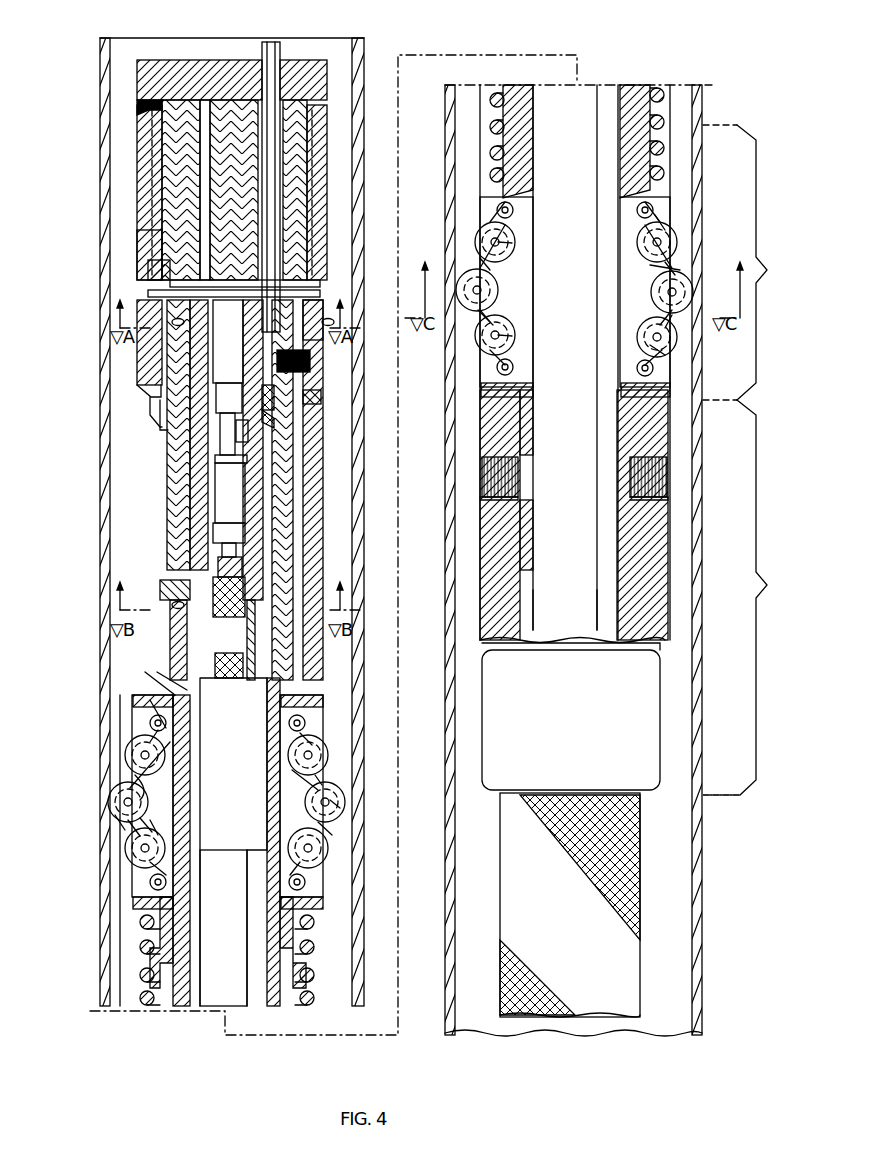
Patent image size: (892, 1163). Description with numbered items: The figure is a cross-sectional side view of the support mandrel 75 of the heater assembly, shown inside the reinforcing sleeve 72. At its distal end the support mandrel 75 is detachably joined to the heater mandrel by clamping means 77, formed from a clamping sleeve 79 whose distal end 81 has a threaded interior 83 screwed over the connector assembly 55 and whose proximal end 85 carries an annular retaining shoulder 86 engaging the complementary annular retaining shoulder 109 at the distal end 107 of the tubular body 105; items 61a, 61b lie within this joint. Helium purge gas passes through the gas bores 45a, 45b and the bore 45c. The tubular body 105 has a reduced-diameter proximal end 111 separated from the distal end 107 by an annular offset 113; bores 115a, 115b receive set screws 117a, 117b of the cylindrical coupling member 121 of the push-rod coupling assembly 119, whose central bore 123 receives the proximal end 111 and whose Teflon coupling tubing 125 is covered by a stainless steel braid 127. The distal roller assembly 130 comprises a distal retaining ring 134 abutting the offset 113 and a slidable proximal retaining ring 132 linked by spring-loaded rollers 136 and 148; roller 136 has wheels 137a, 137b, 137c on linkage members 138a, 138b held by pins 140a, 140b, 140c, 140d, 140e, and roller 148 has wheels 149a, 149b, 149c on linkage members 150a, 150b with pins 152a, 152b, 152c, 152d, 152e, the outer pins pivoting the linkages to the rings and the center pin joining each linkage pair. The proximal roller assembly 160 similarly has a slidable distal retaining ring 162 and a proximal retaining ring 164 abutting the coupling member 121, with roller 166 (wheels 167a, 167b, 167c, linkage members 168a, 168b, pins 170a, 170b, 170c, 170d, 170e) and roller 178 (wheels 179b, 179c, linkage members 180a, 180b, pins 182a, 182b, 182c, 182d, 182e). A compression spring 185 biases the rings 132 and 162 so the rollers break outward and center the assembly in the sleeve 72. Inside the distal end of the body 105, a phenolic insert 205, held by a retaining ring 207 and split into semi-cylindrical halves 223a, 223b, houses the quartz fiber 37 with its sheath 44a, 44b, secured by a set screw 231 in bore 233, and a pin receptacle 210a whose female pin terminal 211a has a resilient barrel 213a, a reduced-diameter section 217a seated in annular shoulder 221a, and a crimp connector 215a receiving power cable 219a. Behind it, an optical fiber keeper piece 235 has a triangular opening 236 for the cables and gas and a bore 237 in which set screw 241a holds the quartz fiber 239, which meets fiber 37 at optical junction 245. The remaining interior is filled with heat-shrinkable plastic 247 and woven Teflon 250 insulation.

The quartz fiber 37 is at (282, 420).
The sheath 44a is at (280, 283).
The plate 44b is at (278, 256).
The gas bore 45a is at (192, 66).
The gas bore 45b is at (203, 185).
The gas bore 45c is at (172, 322).
The connector assembly 55 is at (242, 183).
The seal 61a is at (176, 221).
The seal 61b is at (292, 222).
The reinforcing sleeve 72 is at (356, 97).
The support mandrel 75 is at (328, 128).
The clamping means 77 is at (322, 183).
The clamping sleeve 79 is at (147, 172).
The distal end 81 is at (145, 143).
The threaded interior 83 is at (150, 243).
The proximal end 85 is at (152, 412).
The annular retaining shoulder 86 is at (164, 440).
The tubular body 105 is at (302, 536).
The distal end 107 is at (302, 313).
The annular retaining shoulder 109 is at (320, 398).
The proximal end 111 is at (622, 564).
The annular offset 113 is at (165, 686).
The bore 115a is at (668, 495).
The bore 115b is at (483, 495).
The set screw 117a is at (650, 478).
The set screw 117b is at (505, 478).
The push-rod coupling assembly 119 is at (752, 597).
The cylindrical coupling member 121 is at (591, 730).
The bore 123 is at (530, 614).
The coupling tubing 125 is at (620, 977).
The stainless steel braid 127 is at (622, 870).
The distal roller assembly 130 is at (78, 860).
The proximal retaining ring 132 is at (300, 956).
The distal retaining ring 134 is at (306, 705).
The spring-loaded roller 136 is at (350, 802).
The wheel 137a is at (322, 748).
The wheel 137b is at (332, 805).
The wheel 137c is at (302, 878).
The linkage member 138a is at (330, 790).
The linkage member 138b is at (332, 832).
The pin 140a is at (310, 715).
The pin 140b is at (318, 752).
The pin 140c is at (322, 790).
The pin 140d is at (312, 850).
The pin 140e is at (302, 888).
The spring-loaded roller 148 is at (108, 806).
The wheel 149a is at (135, 742).
The wheel 149b is at (120, 795).
The wheel 149c is at (158, 882).
The linkage member 150a is at (138, 770).
The linkage member 150b is at (148, 850).
The pin 152a is at (164, 722).
The pin 152b is at (148, 755).
The pin 152c is at (132, 803).
The pin 152d is at (148, 848).
The pin 152e is at (166, 884).
The proximal roller assembly 160 is at (752, 262).
The distal retaining ring 162 is at (510, 130).
The proximal retaining ring 164 is at (522, 390).
The roller 166 is at (692, 308).
The wheel 167a is at (660, 242).
The wheel 167b is at (675, 292).
The wheel 167c is at (660, 337).
The linkage member 168a is at (668, 262).
The linkage member 168b is at (674, 336).
The pin 170a is at (652, 208).
The pin 170b is at (665, 232).
The pin 170c is at (705, 262).
The pin 170d is at (666, 360).
The pin 170e is at (652, 370).
The roller 178 is at (470, 266).
The wheel 179b is at (512, 243).
The wheel 179c is at (512, 336).
The linkage member 180a is at (478, 262).
The linkage member 180b is at (478, 316).
The pin 182a is at (508, 205).
The pin 182b is at (499, 240).
The pin 182c is at (481, 290).
The pin 182d is at (480, 322).
The pin 182e is at (513, 366).
The compression spring 185 is at (312, 996).
The phenolic insert 205 is at (155, 386).
The retaining ring 207 is at (160, 300).
The pin receptacle 210a is at (240, 462).
The female pin terminal 211a is at (195, 516).
The resilient barrel 213a is at (170, 372).
The crimp connector 215a is at (222, 516).
The section of reduced diameter 217a is at (250, 480).
The electrical power cable 219a is at (227, 640).
The annular shoulder 221a is at (258, 455).
The semi-cylindrical half 223a is at (289, 512).
The semi-cylindrical half 223b is at (176, 456).
The set screw 231 is at (300, 368).
The bore 233 is at (334, 322).
The optical fiber keeper piece 235 is at (168, 592).
The triangular opening 236 is at (172, 605).
The bore 237 is at (272, 578).
The quartz optical fiber 239 is at (252, 426).
The set screw 241a is at (258, 598).
The optical junction 245 is at (298, 410).
The heat-shrinkable plastic 247 is at (256, 744).
The woven Teflon 250 is at (581, 501).